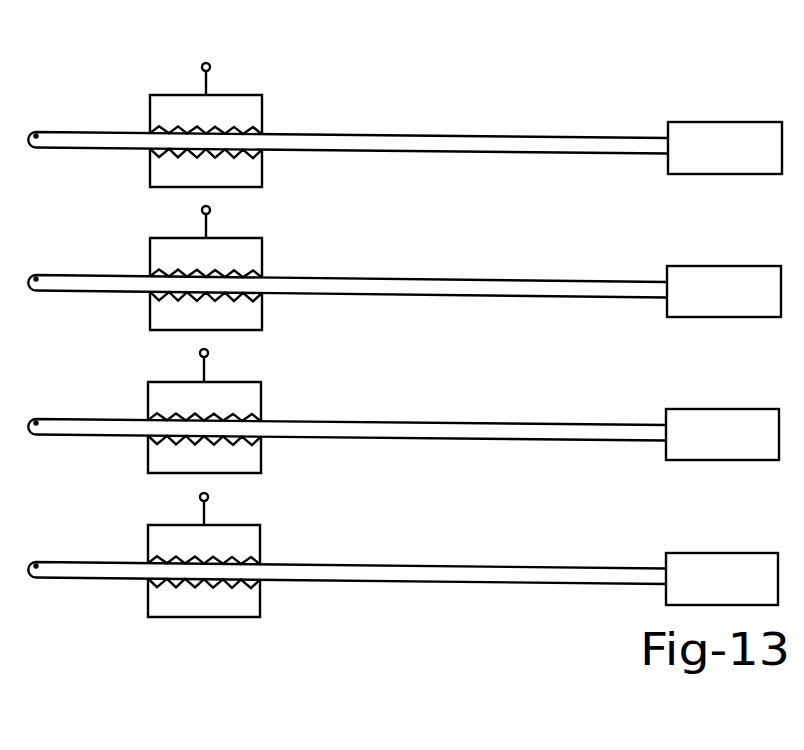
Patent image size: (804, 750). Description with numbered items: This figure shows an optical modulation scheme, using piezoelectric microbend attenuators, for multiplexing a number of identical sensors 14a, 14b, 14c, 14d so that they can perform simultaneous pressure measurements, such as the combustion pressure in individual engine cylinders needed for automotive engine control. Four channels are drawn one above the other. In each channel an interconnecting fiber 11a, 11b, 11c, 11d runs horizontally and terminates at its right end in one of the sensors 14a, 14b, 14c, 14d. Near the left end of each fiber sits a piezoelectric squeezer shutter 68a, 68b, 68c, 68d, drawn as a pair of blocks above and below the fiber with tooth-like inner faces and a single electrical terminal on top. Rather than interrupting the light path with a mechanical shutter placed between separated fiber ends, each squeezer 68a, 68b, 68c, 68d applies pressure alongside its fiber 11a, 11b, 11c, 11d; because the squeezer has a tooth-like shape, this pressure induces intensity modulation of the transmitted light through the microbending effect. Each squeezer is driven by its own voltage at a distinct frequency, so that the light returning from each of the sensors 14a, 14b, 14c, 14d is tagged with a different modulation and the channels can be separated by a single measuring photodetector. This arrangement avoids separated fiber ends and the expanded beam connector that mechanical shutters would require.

The piezoelectric squeezer shutter 68a is at (165, 95).
The piezoelectric squeezer shutter 68b is at (170, 238).
The piezoelectric squeezer shutter 68c is at (173, 382).
The piezoelectric squeezer shutter 68d is at (185, 525).
The interconnecting fiber 11a is at (528, 138).
The interconnecting fiber 11b is at (503, 280).
The interconnecting fiber 11c is at (557, 423).
The interconnecting fiber 11d is at (507, 567).
The sensor 14a is at (697, 122).
The sensor 14b is at (743, 266).
The sensor 14c is at (737, 409).
The sensor 14d is at (738, 553).